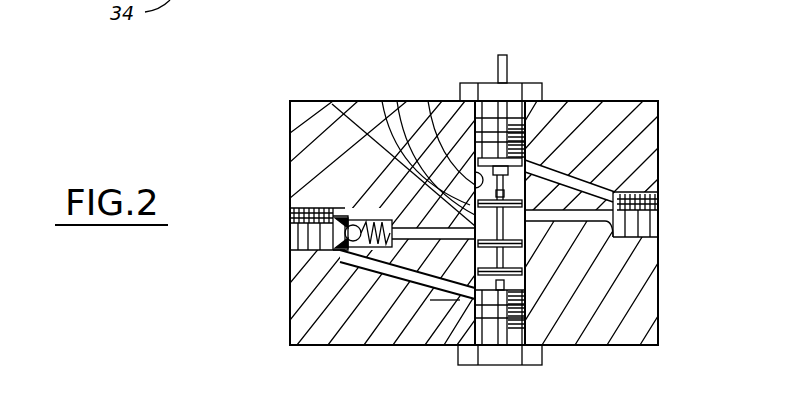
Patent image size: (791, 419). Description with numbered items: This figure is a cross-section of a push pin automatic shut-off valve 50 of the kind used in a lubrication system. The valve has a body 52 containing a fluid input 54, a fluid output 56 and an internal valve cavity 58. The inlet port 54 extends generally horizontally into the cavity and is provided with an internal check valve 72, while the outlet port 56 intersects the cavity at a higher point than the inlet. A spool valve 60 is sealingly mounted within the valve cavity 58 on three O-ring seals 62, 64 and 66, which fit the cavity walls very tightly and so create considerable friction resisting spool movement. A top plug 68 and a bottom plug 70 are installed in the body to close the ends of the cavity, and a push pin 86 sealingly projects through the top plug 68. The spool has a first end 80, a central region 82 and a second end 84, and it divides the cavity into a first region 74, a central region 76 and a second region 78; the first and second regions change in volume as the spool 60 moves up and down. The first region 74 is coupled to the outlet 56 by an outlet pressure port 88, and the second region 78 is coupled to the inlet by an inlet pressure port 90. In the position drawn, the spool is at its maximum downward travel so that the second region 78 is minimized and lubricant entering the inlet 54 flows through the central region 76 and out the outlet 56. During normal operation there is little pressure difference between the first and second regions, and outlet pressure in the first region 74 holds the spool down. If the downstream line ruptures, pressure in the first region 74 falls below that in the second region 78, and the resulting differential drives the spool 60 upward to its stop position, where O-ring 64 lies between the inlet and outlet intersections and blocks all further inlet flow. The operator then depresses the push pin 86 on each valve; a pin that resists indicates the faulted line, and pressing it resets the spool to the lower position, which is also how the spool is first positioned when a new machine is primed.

The push pin automatic shut-off valve 50 is at (646, 55).
The body 52 is at (652, 141).
The fluid input 54 is at (475, 232).
The fluid output 56 is at (660, 213).
The internal valve cavity 58 is at (428, 101).
The spool valve 60 is at (410, 310).
The O-ring seal 62 is at (382, 101).
The O-ring seal 64 is at (528, 262).
The O-ring seal 66 is at (525, 290).
The top plug 68 is at (537, 84).
The bottom plug 70 is at (542, 362).
The internal check valve 72 is at (345, 243).
The first region 74 is at (540, 168).
The central region 76 is at (525, 232).
The second region 78 is at (540, 290).
The first end 80 is at (397, 101).
The central region 82 is at (332, 104).
The second end 84 is at (445, 300).
The push pin 86 is at (507, 61).
The outlet pressure port 88 is at (658, 103).
The inlet pressure port 90 is at (375, 255).